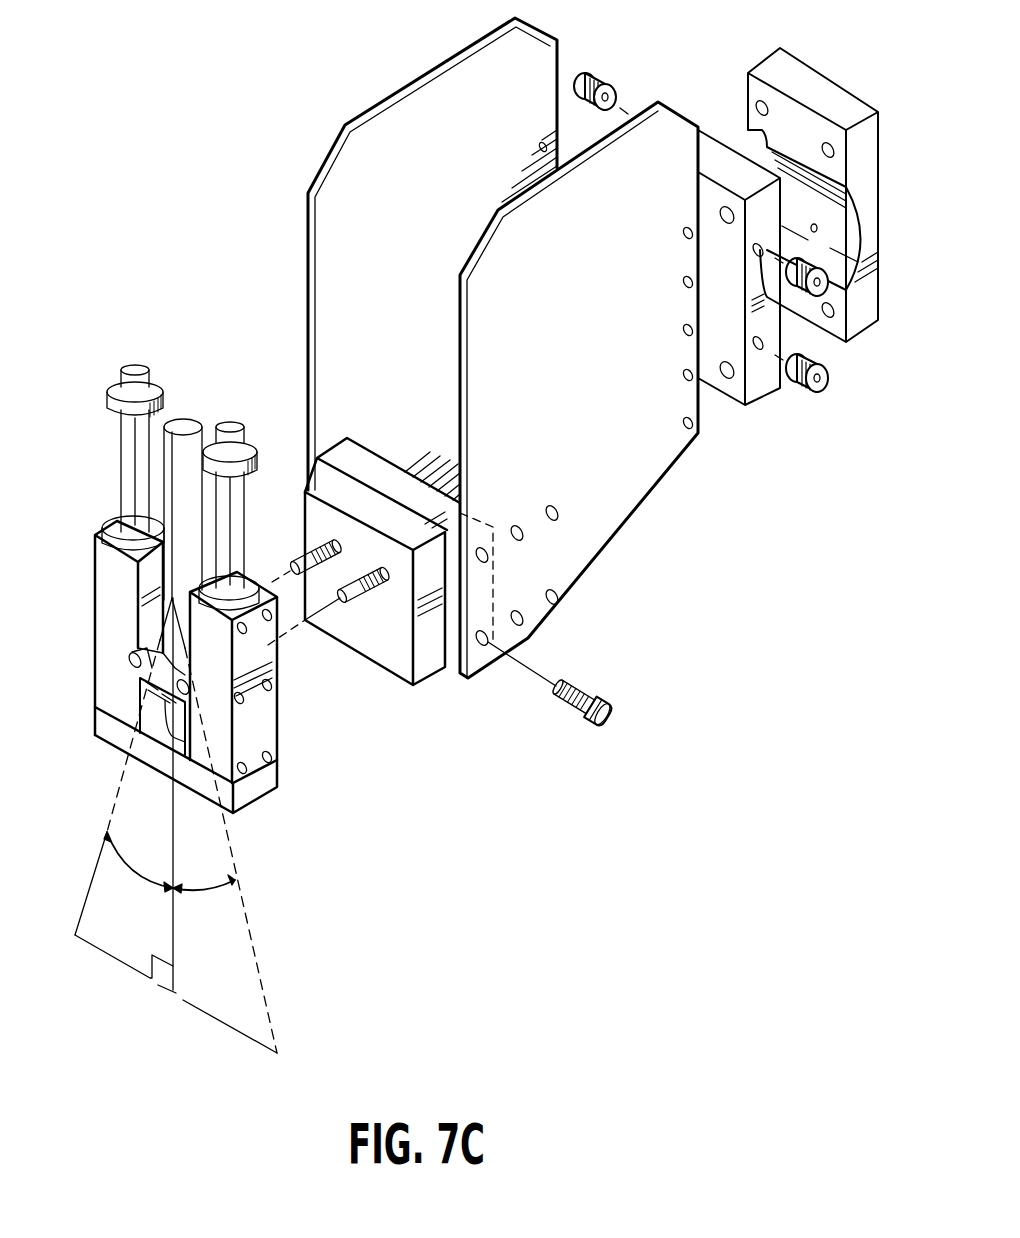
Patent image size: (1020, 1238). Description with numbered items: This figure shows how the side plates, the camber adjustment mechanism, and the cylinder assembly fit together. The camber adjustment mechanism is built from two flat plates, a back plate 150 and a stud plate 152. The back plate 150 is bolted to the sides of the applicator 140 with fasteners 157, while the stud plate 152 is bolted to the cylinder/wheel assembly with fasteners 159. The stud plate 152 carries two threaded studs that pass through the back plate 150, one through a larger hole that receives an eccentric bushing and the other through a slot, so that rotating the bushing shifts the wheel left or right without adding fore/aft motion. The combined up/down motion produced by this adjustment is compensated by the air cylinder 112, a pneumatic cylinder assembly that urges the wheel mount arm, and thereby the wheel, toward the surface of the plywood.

The air cylinder 112 is at (183, 505).
The applicator 140 is at (306, 285).
The back plate 150 is at (383, 473).
The stud plate 152 is at (380, 653).
The fasteners 157 is at (588, 695).
The fasteners 159 is at (295, 562).